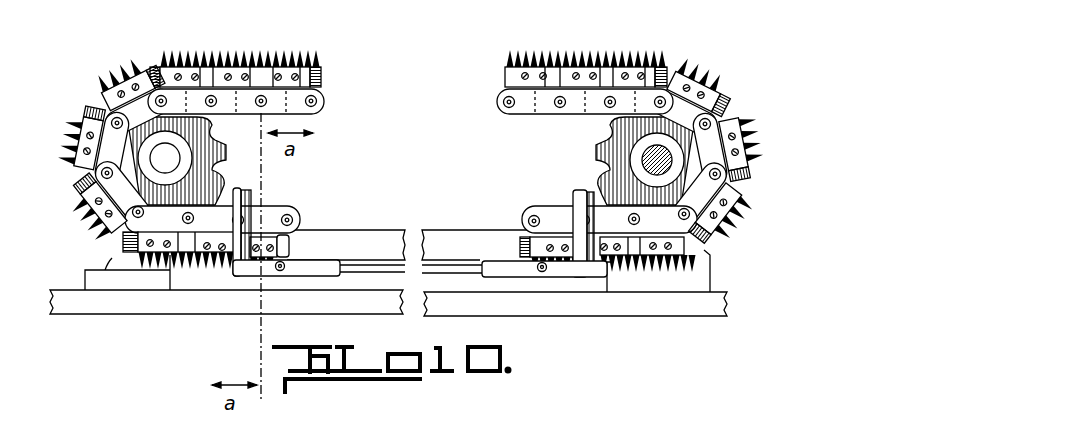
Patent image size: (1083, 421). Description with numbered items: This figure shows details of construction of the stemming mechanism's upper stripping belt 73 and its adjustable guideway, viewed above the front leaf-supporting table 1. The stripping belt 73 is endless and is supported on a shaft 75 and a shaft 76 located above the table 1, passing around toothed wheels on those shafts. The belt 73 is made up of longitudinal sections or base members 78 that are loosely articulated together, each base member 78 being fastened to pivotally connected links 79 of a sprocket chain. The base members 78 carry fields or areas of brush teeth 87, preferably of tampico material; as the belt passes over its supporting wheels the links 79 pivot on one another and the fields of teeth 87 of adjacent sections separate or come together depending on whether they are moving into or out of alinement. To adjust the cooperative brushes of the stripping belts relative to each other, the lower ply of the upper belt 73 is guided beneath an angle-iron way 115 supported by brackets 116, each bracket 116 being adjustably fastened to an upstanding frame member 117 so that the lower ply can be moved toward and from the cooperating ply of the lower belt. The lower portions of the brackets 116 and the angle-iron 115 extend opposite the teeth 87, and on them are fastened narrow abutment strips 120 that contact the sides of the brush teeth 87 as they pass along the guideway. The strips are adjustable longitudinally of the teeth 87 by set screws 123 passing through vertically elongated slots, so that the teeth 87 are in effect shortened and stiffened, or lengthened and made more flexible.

The front leaf-supporting table 1 is at (190, 314).
The stripping belt 73 is at (218, 218).
The shaft 75 is at (168, 156).
The shaft 76 is at (655, 162).
The base members 78 is at (322, 76).
The links 79 is at (320, 112).
The teeth 87 is at (266, 52).
The angle-iron way 115 is at (327, 251).
The brackets 116 is at (245, 207).
The upstanding frame member 117 is at (105, 263).
The abutment 120 is at (451, 268).
The set screw 123 is at (282, 270).